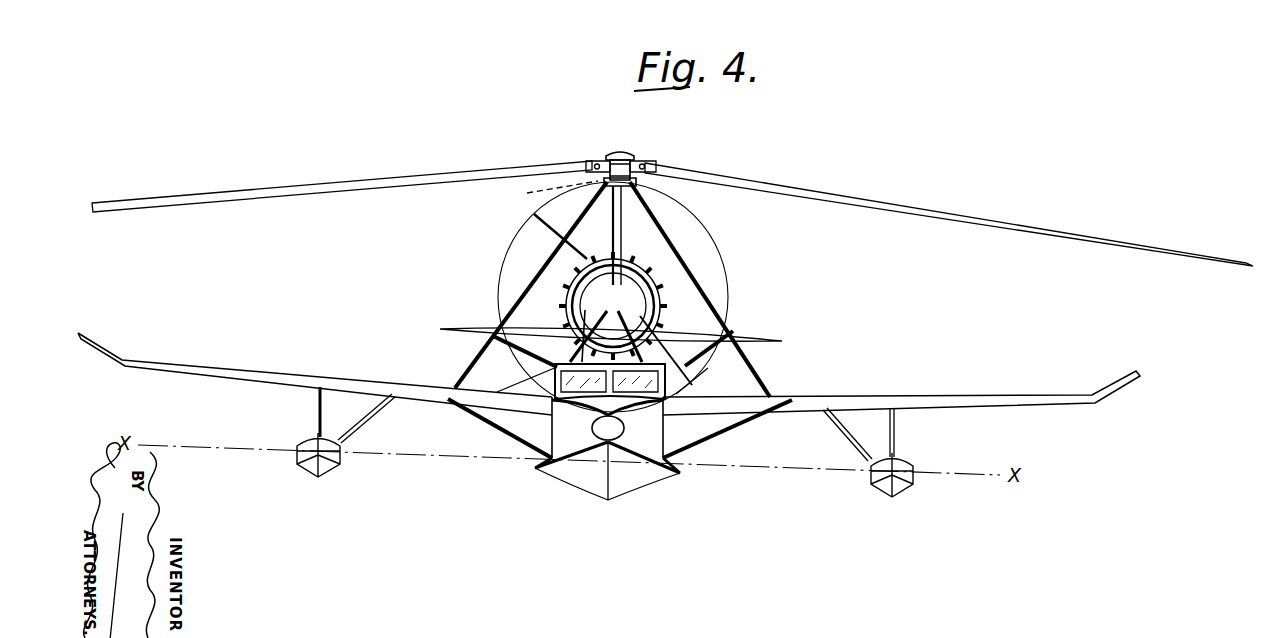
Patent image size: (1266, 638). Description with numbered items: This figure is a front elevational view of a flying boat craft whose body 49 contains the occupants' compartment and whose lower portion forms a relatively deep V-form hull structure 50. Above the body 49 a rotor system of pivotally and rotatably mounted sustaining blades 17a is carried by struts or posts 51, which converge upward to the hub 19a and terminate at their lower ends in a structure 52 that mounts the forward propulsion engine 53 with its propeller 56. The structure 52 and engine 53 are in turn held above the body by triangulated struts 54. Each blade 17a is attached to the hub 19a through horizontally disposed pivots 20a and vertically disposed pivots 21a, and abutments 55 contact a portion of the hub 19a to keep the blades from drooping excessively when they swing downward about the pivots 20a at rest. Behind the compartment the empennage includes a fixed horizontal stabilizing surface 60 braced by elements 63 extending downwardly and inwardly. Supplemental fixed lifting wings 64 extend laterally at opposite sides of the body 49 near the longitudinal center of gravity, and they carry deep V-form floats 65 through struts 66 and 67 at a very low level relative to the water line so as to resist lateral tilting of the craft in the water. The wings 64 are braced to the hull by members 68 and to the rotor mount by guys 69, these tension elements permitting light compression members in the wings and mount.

The sustaining blades 17a is at (300, 186).
The hub 19a is at (621, 156).
The horizontal pivots 20a is at (608, 160).
The vertical pivots 21a is at (547, 192).
The abutments 55 is at (667, 176).
The struts or posts 51 is at (619, 222).
The structure 52 is at (613, 306).
The forward propulsion engine 53 is at (667, 309).
The struts 54 is at (565, 322).
The propeller 56 is at (553, 233).
The guys 69 is at (522, 279).
The horizontal stabilizing surface 60 is at (456, 328).
The bracing elements 63 is at (523, 356).
The body 49 is at (607, 435).
The hull structure 50 is at (628, 484).
The fixed lifting wings 64 is at (281, 373).
The bracing members 68 is at (497, 430).
The float strut 66 is at (323, 407).
The float strut 67 is at (369, 413).
The floats 65 is at (311, 444).